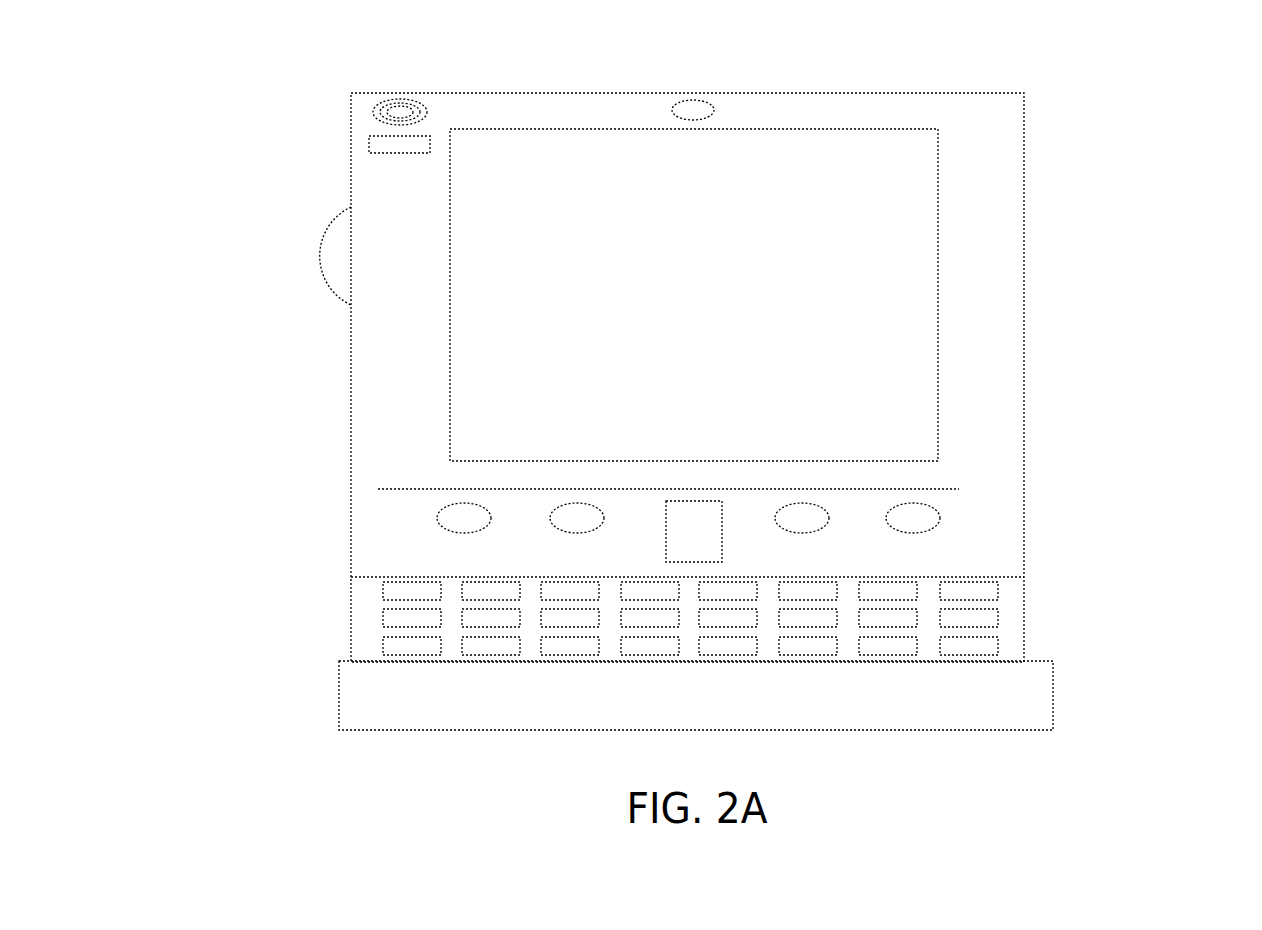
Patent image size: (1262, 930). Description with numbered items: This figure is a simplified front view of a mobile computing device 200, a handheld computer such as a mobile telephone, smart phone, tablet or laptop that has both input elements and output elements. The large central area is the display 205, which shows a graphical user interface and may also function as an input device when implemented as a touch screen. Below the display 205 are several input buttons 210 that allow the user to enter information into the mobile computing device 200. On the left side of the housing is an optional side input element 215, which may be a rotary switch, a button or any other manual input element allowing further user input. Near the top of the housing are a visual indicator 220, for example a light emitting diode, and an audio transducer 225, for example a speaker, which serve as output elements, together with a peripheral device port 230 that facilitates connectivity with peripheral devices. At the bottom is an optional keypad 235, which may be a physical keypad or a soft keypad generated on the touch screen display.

The mobile computing device 200 is at (1009, 106).
The display 205 is at (600, 404).
The input buttons 210 is at (693, 534).
The side input element 215 is at (337, 256).
The visual indicator 220 is at (367, 148).
The audio transducer 225 is at (367, 113).
The peripheral device port 230 is at (714, 110).
The keypad 235 is at (360, 651).